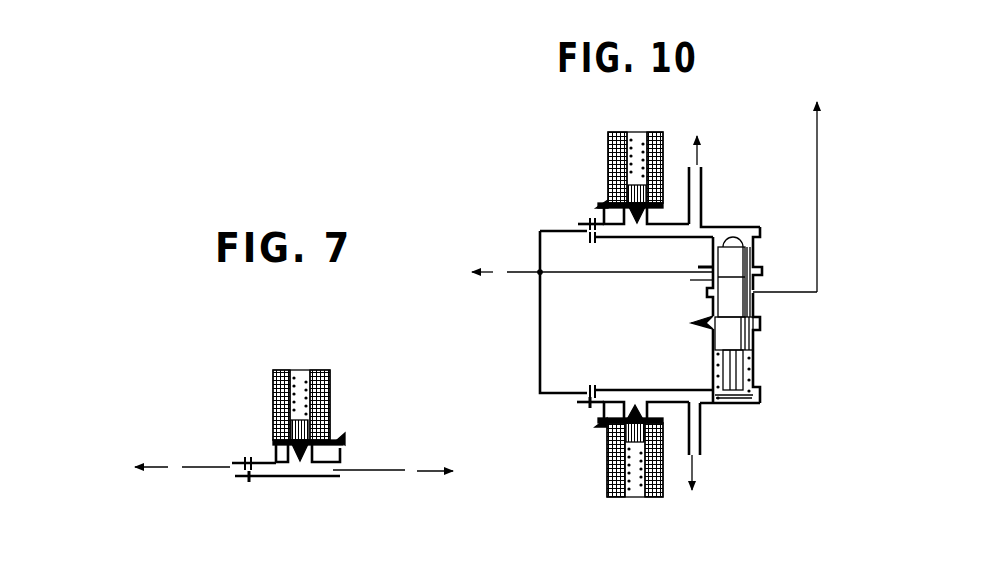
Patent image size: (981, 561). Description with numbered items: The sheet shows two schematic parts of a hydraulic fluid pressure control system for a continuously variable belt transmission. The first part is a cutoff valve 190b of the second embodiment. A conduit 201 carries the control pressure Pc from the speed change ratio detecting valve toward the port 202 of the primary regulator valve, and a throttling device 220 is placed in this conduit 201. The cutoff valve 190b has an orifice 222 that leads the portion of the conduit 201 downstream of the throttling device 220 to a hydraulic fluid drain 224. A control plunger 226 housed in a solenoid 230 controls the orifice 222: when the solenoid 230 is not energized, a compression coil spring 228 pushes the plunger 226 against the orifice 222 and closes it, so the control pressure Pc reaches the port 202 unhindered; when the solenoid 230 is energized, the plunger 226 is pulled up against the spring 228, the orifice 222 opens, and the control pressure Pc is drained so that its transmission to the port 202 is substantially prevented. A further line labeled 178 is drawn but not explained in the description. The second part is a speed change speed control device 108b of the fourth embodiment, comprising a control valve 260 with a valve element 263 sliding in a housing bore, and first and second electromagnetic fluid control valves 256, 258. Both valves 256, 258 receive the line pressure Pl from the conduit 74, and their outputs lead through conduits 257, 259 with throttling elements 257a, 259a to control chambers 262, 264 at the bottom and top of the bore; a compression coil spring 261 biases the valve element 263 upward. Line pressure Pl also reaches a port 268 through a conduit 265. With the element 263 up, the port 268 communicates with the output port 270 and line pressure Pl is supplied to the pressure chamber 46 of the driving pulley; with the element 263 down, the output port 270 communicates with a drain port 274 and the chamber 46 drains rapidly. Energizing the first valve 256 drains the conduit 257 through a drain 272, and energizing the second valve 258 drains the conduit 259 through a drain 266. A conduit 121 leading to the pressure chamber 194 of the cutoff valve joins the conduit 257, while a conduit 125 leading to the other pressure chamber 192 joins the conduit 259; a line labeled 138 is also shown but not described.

In FIG. 7, the fuel supply line 178 is at (161, 465).
In FIG. 7, the control pressure Pc is at (197, 465).
In FIG. 7, the throttling device 220 is at (253, 482).
In FIG. 7, the orifice 222 is at (304, 464).
In FIG. 7, the hydraulic fluid drain 224 is at (337, 438).
In FIG. 7, the control plunger 226 is at (287, 446).
In FIG. 7, the compression coil spring 228 is at (319, 389).
In FIG. 7, the solenoid 230 is at (281, 368).
In FIG. 7, the cutoff valve 190b is at (310, 366).
In FIG. 7, the conduit 201 is at (390, 469).
In FIG. 7, the port 202 is at (457, 473).
In FIG. 10, the pressure chamber 46 is at (815, 183).
In FIG. 10, the conduit 74 is at (467, 271).
In FIG. 10, the line pressure Pl is at (517, 271).
In FIG. 10, the speed change speed control device 108b is at (696, 535).
In FIG. 10, the conduit 121 is at (698, 426).
In FIG. 10, the conduit 125 is at (703, 186).
In FIG. 10, the line 138 is at (817, 188).
In FIG. 10, the pressure chamber 192 is at (700, 155).
In FIG. 10, the pressure chamber 194 is at (698, 473).
In FIG. 10, the first electromagnetic fluid control valve 256 is at (607, 483).
In FIG. 10, the conduit 257 is at (672, 396).
In FIG. 10, the throttling element 257a is at (590, 385).
In FIG. 10, the second electromagnetic fluid control valve 258 is at (608, 148).
In FIG. 10, the conduit 259 is at (660, 238).
In FIG. 10, the throttling element 259a is at (590, 218).
In FIG. 10, the control valve 260 is at (760, 373).
In FIG. 10, the compression coil spring 261 is at (760, 394).
In FIG. 10, the control chamber 262 is at (747, 415).
In FIG. 10, the valve element 263 is at (746, 336).
In FIG. 10, the control chamber 264 is at (737, 227).
In FIG. 10, the conduit 265 is at (575, 273).
In FIG. 10, the drain 266 is at (603, 206).
In FIG. 10, the port 268 is at (700, 278).
In FIG. 10, the output port 270 is at (762, 290).
In FIG. 10, the drain 272 is at (602, 425).
In FIG. 10, the drain port 274 is at (692, 321).